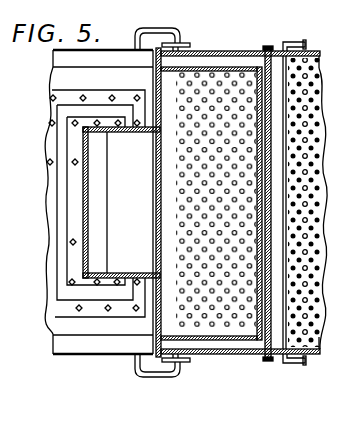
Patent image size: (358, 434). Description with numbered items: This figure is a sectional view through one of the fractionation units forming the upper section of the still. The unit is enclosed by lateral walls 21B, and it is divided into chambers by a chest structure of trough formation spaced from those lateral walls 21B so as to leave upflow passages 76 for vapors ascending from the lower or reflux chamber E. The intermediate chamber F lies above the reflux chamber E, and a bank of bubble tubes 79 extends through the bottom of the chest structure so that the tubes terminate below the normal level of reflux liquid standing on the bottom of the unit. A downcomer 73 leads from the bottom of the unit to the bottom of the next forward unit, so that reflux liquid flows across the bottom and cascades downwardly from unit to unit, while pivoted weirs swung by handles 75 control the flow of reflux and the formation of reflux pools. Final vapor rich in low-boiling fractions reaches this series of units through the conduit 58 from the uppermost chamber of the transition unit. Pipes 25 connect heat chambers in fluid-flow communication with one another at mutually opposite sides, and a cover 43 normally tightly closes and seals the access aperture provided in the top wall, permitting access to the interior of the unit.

The pipes 25 is at (163, 30).
The lateral walls 21B is at (195, 52).
The bubble tubes 79 is at (243, 72).
The downcomer 73 is at (277, 63).
The handles 75 is at (288, 36).
The conduit 58 is at (83, 200).
The cover 43 is at (62, 307).
The upflow passages 76 is at (203, 343).
The intermediate chamber F is at (166, 195).
The reflux chamber E is at (320, 192).